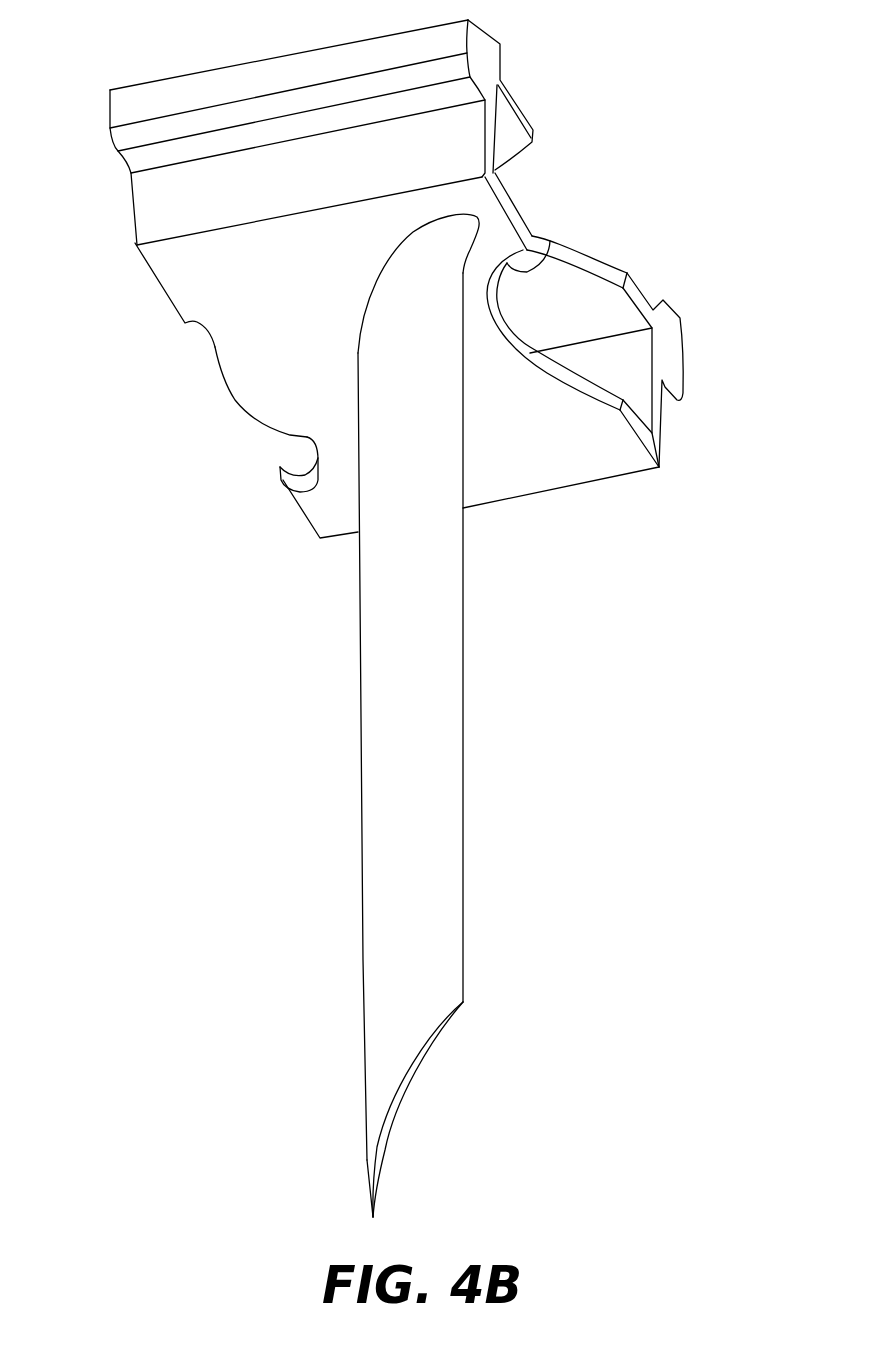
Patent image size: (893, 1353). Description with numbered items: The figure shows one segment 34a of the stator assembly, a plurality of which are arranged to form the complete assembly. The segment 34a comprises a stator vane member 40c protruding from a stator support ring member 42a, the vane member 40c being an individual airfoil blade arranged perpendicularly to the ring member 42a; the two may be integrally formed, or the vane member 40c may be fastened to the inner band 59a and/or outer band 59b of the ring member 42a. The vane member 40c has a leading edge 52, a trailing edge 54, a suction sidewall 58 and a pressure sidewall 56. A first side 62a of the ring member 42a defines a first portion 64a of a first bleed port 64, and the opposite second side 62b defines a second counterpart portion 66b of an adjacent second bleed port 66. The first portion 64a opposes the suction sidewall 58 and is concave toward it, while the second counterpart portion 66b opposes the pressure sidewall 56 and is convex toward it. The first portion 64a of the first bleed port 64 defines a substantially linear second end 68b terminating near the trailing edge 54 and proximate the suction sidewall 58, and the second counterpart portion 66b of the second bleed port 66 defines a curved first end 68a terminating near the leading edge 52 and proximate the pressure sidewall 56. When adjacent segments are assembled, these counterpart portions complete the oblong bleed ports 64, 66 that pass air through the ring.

The segment 34a is at (544, 61).
The stator support ring member 42a is at (162, 211).
The first side 62a is at (128, 292).
The second side 62b is at (570, 170).
The first bleed port 64 is at (219, 419).
The first portion 64a is at (239, 375).
The second end 68b is at (320, 448).
The first end 68a is at (537, 261).
The second bleed port 66 is at (605, 342).
The second counterpart portion 66b is at (567, 404).
The outer band 59b is at (649, 291).
The inner band 59a is at (598, 472).
The stator vane member 40c is at (432, 719).
The leading edge 52 is at (468, 572).
The suction sidewall 58 is at (381, 689).
The pressure sidewall 56 is at (410, 1083).
The trailing edge 54 is at (368, 1219).